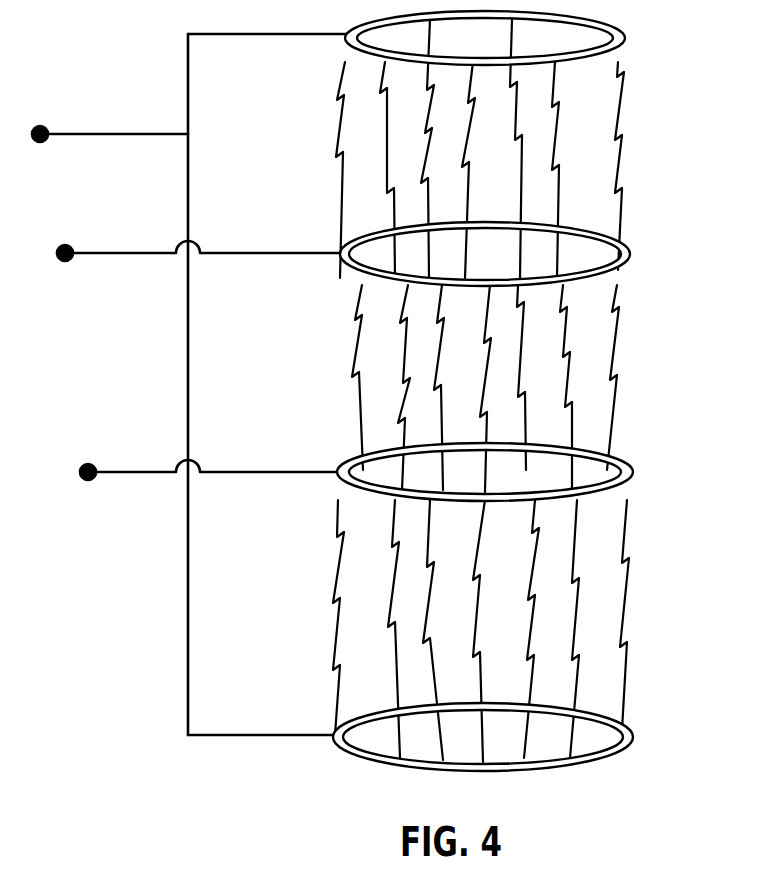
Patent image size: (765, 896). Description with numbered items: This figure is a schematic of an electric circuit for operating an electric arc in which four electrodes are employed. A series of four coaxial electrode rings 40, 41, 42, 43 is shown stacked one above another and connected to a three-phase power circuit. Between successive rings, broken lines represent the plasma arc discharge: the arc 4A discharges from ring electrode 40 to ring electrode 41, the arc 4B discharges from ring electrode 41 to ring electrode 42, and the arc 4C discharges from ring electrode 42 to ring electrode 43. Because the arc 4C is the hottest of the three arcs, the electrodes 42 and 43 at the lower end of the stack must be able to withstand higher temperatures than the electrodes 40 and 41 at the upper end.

The electrode ring 40 is at (626, 38).
The electrode ring 41 is at (631, 254).
The electrode ring 42 is at (634, 472).
The electrode ring 43 is at (634, 738).
The plasma arc discharge 4A is at (620, 152).
The plasma arc discharge 4B is at (617, 360).
The plasma arc discharge 4C is at (625, 598).